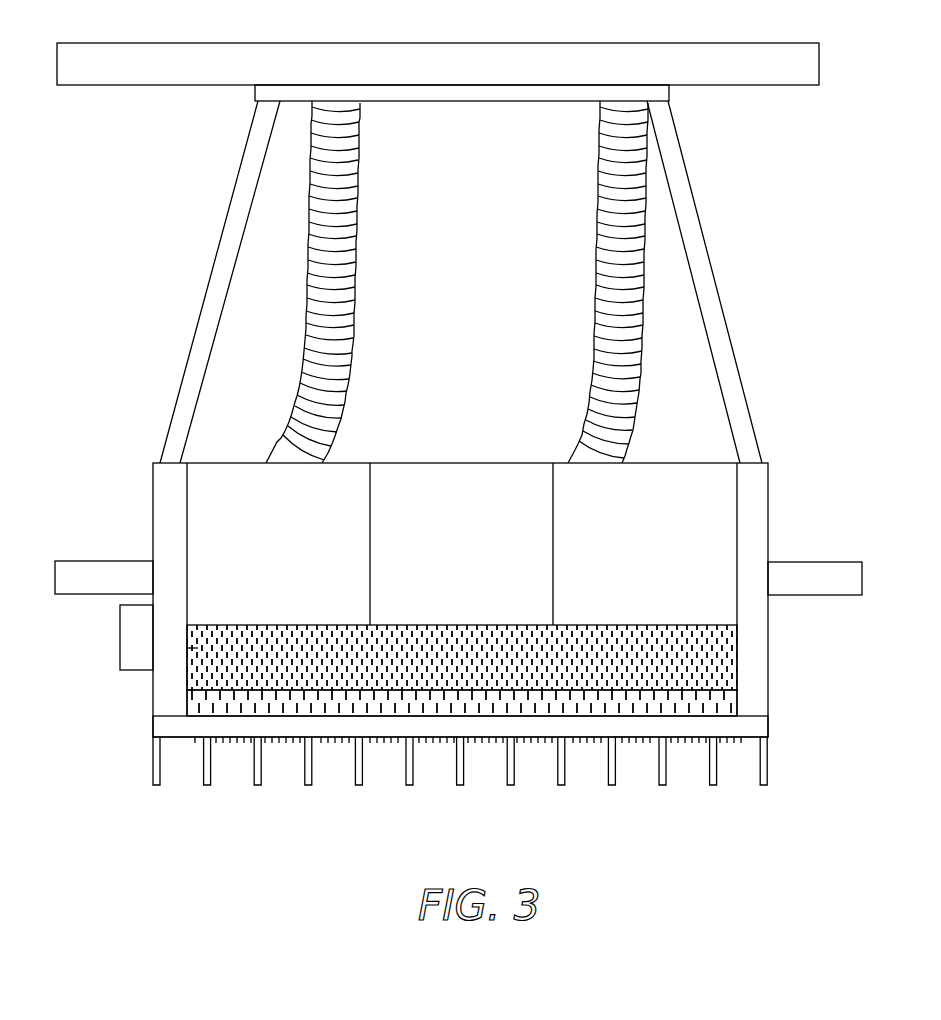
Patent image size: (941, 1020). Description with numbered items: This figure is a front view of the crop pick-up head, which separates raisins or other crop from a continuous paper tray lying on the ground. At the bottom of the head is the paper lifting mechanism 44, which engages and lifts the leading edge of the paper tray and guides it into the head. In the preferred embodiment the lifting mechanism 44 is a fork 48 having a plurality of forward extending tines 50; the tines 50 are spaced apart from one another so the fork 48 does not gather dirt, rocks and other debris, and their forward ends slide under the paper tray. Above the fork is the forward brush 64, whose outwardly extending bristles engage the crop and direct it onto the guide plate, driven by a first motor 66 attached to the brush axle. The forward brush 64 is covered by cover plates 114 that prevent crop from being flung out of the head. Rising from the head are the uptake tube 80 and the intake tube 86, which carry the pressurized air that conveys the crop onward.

The paper lifting mechanism 44 is at (810, 757).
The fork 48 is at (152, 739).
The tines 50 is at (153, 778).
The forward brush 64 is at (655, 658).
The first motor 66 is at (140, 647).
The uptake tube 80 is at (330, 238).
The intake tube 86 is at (622, 265).
The cover plate 114 is at (628, 545).